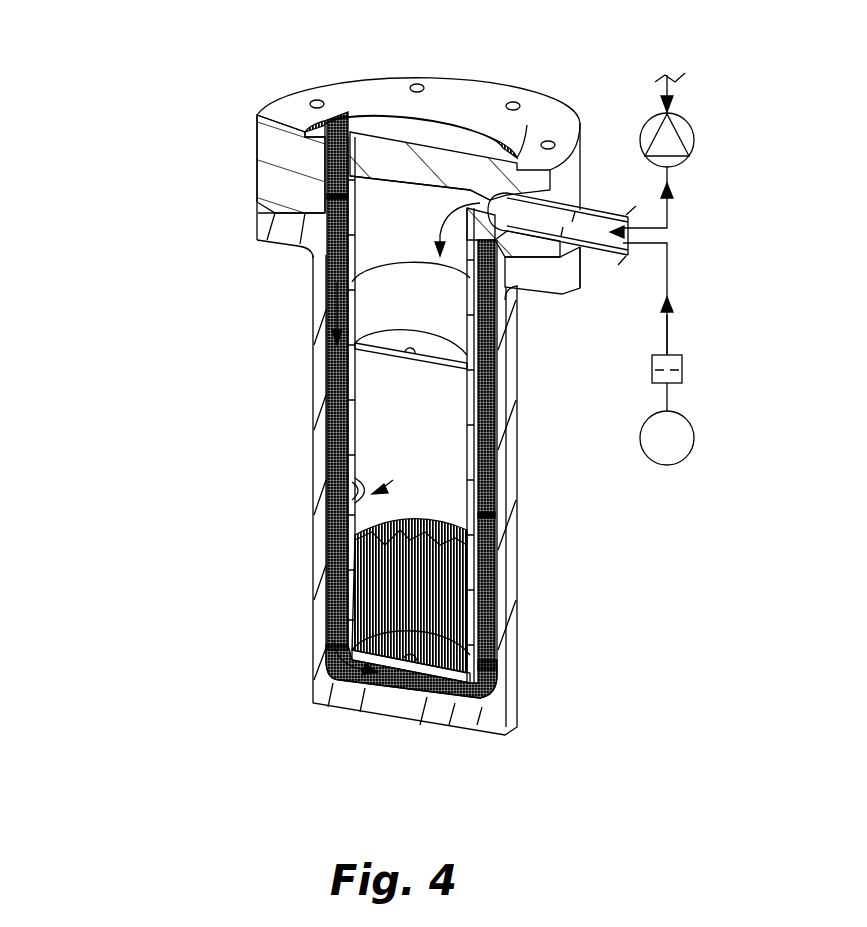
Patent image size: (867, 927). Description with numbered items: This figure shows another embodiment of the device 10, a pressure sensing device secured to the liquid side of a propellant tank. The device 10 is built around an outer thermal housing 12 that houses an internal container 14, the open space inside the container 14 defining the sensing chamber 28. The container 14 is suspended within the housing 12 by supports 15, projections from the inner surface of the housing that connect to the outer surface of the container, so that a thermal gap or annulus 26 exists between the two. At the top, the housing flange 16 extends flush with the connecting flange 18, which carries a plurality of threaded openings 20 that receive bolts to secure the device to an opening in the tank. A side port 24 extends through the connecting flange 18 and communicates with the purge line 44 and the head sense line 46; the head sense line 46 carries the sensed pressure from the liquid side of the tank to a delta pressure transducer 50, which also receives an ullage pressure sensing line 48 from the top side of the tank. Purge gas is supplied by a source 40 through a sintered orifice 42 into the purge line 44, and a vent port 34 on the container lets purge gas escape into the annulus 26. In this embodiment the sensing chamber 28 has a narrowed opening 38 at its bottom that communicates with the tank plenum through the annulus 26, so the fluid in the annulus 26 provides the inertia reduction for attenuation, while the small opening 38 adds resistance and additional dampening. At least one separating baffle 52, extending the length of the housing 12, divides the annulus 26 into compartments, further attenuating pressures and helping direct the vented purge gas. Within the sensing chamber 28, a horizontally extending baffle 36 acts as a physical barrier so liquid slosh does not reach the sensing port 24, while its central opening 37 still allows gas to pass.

The device 10 is at (183, 68).
The outer thermal housing 12 is at (312, 565).
The internal container 14 is at (347, 460).
The supports 15 is at (327, 175).
The housing flange 16 is at (280, 248).
The connecting flange 18 is at (578, 123).
The threaded openings 20 is at (316, 100).
The side port 24 is at (586, 213).
The thermal gap 26 is at (345, 125).
The sensing chamber 28 is at (452, 410).
The vent port 34 is at (362, 480).
The horizontally extending baffle 36 is at (432, 127).
The central opening 37 is at (412, 353).
The opening 38 is at (407, 660).
The purge gas source 40 is at (694, 443).
The sintered orifice 42 is at (682, 378).
The purge line 44 is at (668, 330).
The head sense line 46 is at (668, 217).
The ullage pressure sensing line 48 is at (673, 88).
The delta pressure transducer 50 is at (694, 133).
The separating baffle 52 is at (388, 102).